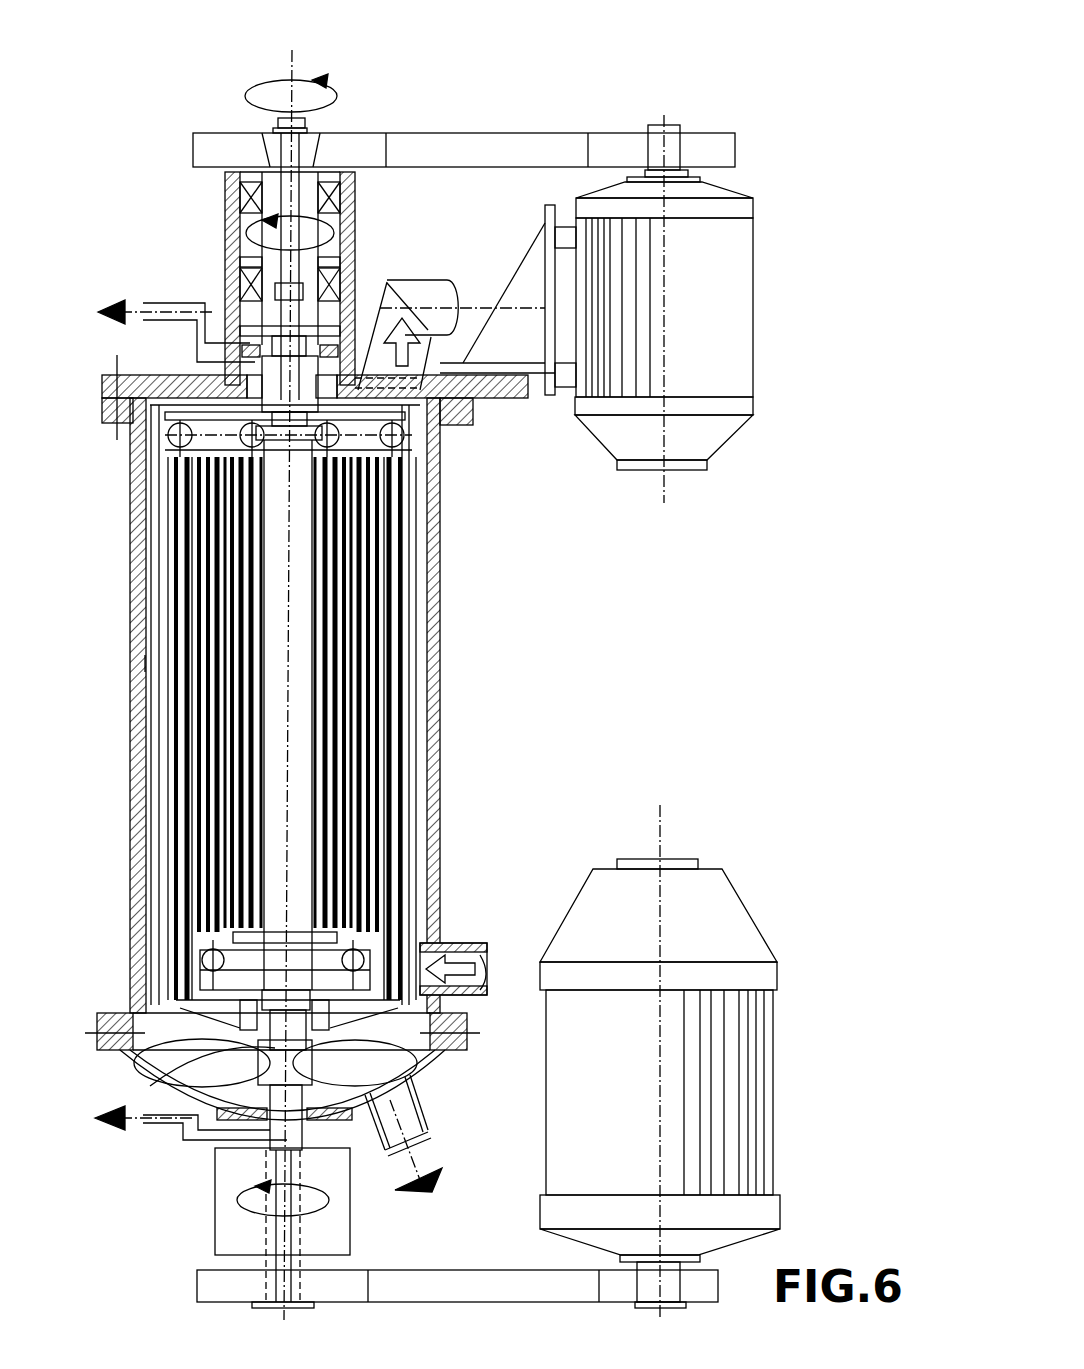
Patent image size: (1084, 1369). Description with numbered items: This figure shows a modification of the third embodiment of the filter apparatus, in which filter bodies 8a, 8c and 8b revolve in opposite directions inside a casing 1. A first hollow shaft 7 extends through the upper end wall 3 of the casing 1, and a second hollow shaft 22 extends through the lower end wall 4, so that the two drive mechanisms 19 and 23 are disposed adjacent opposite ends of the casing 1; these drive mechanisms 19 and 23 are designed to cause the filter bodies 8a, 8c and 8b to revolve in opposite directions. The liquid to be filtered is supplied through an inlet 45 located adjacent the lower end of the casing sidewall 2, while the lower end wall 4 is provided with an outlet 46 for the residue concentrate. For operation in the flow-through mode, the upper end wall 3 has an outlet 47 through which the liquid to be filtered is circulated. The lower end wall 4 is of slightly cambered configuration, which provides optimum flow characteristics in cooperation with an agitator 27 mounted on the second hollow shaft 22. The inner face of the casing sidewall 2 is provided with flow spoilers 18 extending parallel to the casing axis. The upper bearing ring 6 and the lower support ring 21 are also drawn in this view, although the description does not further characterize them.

The casing 1 is at (495, 737).
The casing sidewall 2 is at (440, 795).
The upper end wall 3 is at (165, 372).
The lower end wall 4 is at (162, 1125).
The upper bearing ring 6 is at (405, 471).
The hollow shaft 7 is at (268, 368).
The filter body 8a is at (320, 530).
The filter body 8b is at (366, 621).
The filter body 8c is at (403, 600).
The flow spoilers 18 is at (143, 665).
The drive mechanism 19 is at (368, 112).
The lower support ring 21 is at (323, 955).
The hollow shaft 22 is at (148, 1098).
The drive mechanism 23 is at (405, 1243).
The agitator 27 is at (420, 1078).
The inlet 45 is at (487, 965).
The outlet 46 is at (407, 1120).
The outlet 47 is at (425, 297).